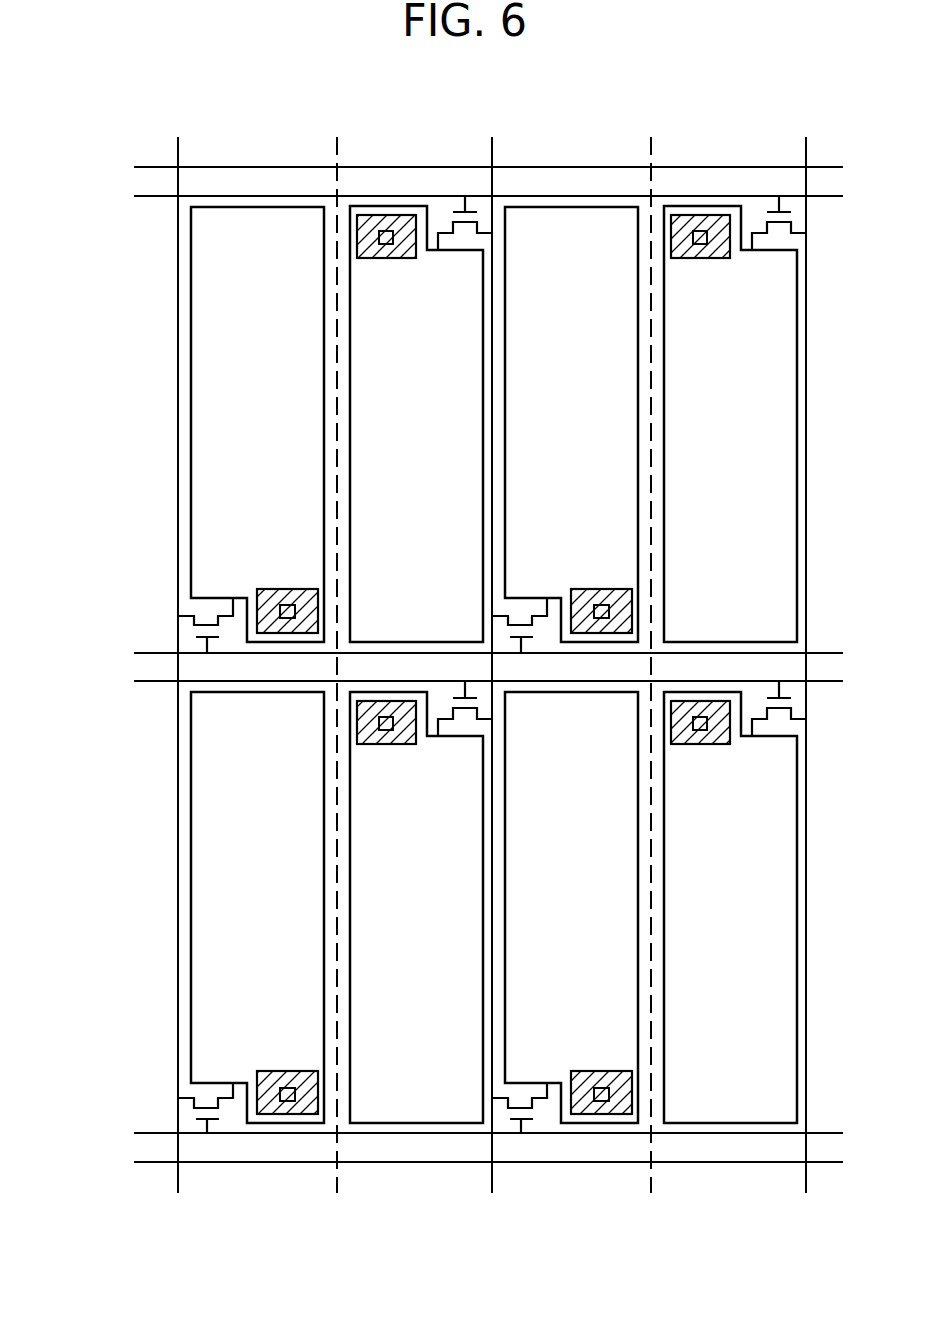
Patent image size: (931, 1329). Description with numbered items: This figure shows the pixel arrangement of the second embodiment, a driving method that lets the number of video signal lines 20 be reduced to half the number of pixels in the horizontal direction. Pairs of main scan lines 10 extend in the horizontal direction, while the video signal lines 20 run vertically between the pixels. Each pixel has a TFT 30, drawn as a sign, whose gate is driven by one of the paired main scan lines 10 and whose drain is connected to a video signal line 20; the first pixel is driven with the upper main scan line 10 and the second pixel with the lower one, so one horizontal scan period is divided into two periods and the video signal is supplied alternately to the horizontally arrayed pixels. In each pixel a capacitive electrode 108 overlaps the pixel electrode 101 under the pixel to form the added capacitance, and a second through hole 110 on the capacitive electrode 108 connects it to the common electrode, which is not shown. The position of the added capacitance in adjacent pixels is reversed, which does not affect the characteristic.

The main scan line 10 is at (168, 167).
The video signal line 20 is at (178, 303).
The TFT 30 is at (195, 628).
The pixel electrode 101 is at (220, 403).
The capacitive electrode 108 is at (257, 596).
The second through hole 110 is at (288, 607).